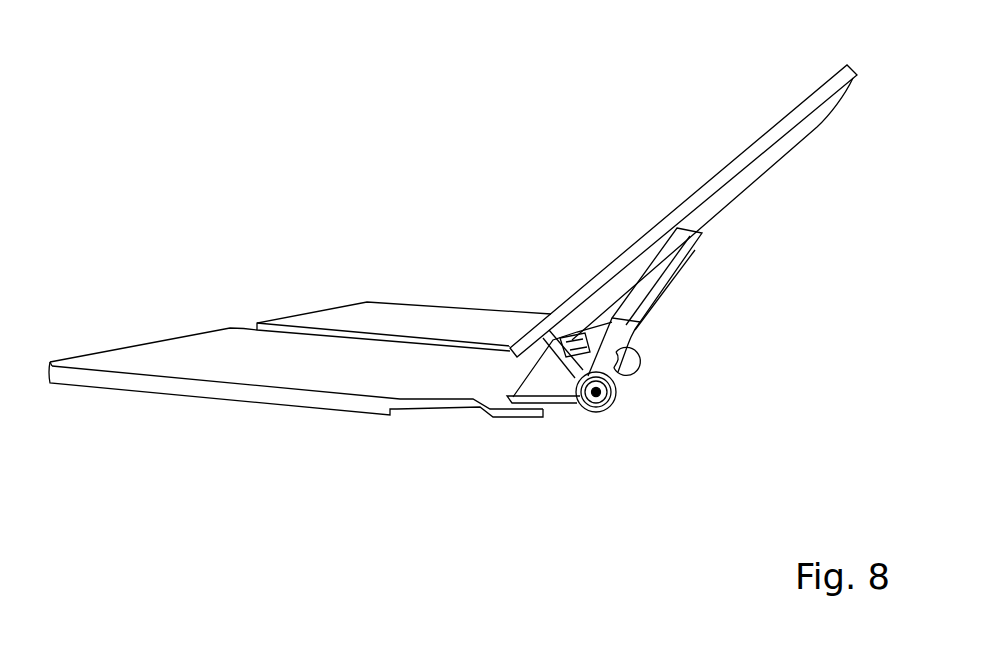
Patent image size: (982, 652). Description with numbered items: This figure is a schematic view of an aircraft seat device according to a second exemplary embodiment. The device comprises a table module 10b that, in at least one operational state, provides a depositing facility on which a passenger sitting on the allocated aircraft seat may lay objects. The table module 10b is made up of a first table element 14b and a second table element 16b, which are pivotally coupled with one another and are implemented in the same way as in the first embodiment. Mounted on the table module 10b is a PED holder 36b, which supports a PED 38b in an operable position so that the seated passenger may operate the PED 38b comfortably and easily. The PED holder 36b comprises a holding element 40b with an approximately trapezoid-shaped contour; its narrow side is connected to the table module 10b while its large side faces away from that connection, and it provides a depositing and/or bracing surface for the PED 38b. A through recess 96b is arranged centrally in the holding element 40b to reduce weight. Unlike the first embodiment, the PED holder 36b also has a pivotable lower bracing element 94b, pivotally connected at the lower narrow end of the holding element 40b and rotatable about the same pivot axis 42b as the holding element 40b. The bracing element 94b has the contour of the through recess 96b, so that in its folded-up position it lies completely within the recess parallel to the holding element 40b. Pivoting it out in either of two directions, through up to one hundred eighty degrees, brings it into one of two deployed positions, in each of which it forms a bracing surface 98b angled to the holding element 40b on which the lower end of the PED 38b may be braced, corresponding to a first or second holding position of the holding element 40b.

The table module 10b is at (233, 312).
The first table element 14b is at (293, 362).
The second table element 16b is at (428, 328).
The PED holder 36b is at (592, 257).
The PED 38b is at (700, 180).
The holding element 40b is at (683, 248).
The hinge pivot 42b is at (588, 418).
The pivotable bracing element 94b is at (565, 397).
The through recess 96b is at (637, 328).
The bracing surface 98b is at (635, 365).